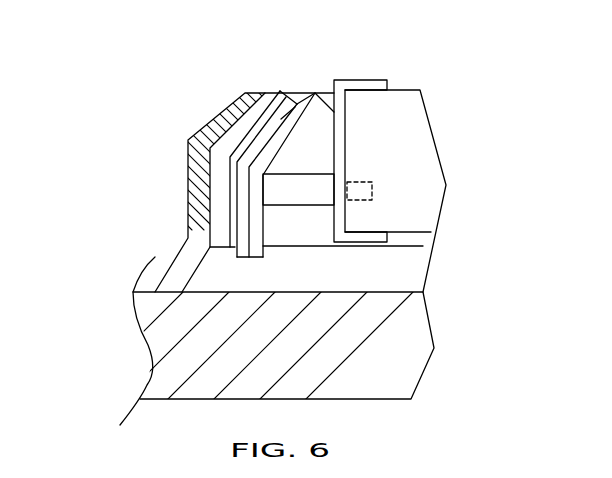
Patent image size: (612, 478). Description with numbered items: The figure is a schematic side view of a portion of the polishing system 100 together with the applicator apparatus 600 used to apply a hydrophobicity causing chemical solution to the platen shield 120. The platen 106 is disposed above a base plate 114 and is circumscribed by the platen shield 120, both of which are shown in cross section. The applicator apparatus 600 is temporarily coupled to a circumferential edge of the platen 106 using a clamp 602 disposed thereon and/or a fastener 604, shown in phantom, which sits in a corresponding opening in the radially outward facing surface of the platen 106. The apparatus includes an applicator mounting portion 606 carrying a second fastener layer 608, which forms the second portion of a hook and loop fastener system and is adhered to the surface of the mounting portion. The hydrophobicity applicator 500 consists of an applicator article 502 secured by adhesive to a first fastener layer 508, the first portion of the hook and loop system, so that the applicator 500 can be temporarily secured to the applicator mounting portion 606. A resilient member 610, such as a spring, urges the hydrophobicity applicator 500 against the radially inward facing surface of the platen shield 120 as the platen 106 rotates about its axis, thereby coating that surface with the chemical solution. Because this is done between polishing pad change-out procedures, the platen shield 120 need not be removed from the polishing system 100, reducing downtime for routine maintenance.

The polishing system 100 is at (140, 92).
The base plate 114 is at (390, 378).
The platen shield 120 is at (188, 182).
The hydrophobicity applicator 500 is at (294, 95).
The applicator article 502 is at (262, 110).
The first fastener layer 508 is at (302, 97).
The applicator apparatus 600 is at (396, 68).
The clamp 602 is at (367, 82).
The platen 106 is at (418, 169).
The fastener 604 is at (372, 189).
The applicator mounting portion 606 is at (258, 249).
The second fastener layer 608 is at (238, 257).
The resilient member 610 is at (313, 201).